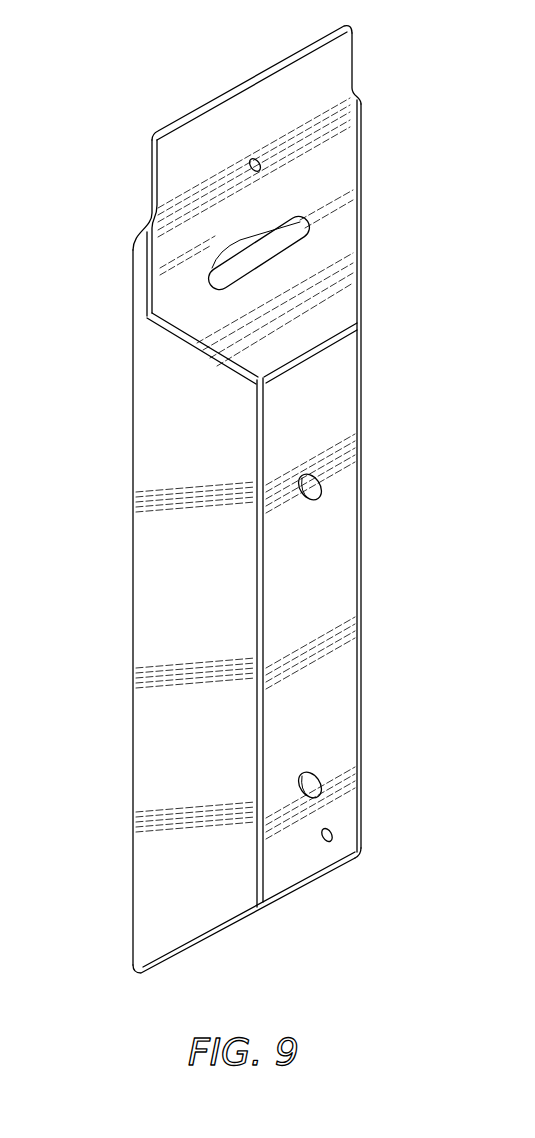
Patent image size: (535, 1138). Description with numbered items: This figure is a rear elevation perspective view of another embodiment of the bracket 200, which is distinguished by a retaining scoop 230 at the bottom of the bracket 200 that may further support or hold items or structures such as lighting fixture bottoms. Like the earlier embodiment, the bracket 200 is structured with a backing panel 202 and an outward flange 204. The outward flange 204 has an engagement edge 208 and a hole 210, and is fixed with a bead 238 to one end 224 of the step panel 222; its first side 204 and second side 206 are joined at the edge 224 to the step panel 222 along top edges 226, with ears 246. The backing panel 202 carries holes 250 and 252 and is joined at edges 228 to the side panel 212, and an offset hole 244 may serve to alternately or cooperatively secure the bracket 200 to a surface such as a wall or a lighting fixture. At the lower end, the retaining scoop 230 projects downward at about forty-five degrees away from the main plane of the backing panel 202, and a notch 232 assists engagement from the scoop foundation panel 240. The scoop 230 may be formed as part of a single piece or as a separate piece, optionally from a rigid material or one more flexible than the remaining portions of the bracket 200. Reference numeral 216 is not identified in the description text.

The bracket 200 is at (168, 34).
The backing panel 202 is at (362, 388).
The outward flange 204 is at (180, 182).
The second side 206 is at (354, 50).
The engagement edge 208 is at (267, 68).
The hole 210 is at (252, 159).
The side panel 212 is at (175, 645).
The right panel 216 is at (330, 712).
The step panel 222 is at (338, 250).
The end of step panel 224 is at (180, 300).
The top edges 226 is at (185, 340).
The edges 228 is at (362, 500).
The retaining scoop 230 is at (347, 865).
The notch 232 is at (218, 928).
The bead 238 is at (268, 230).
The scoop foundation panel 240 is at (183, 955).
The offset hole 244 is at (328, 843).
The ears 246 is at (362, 97).
The hole 250 is at (312, 768).
The hole 252 is at (310, 502).